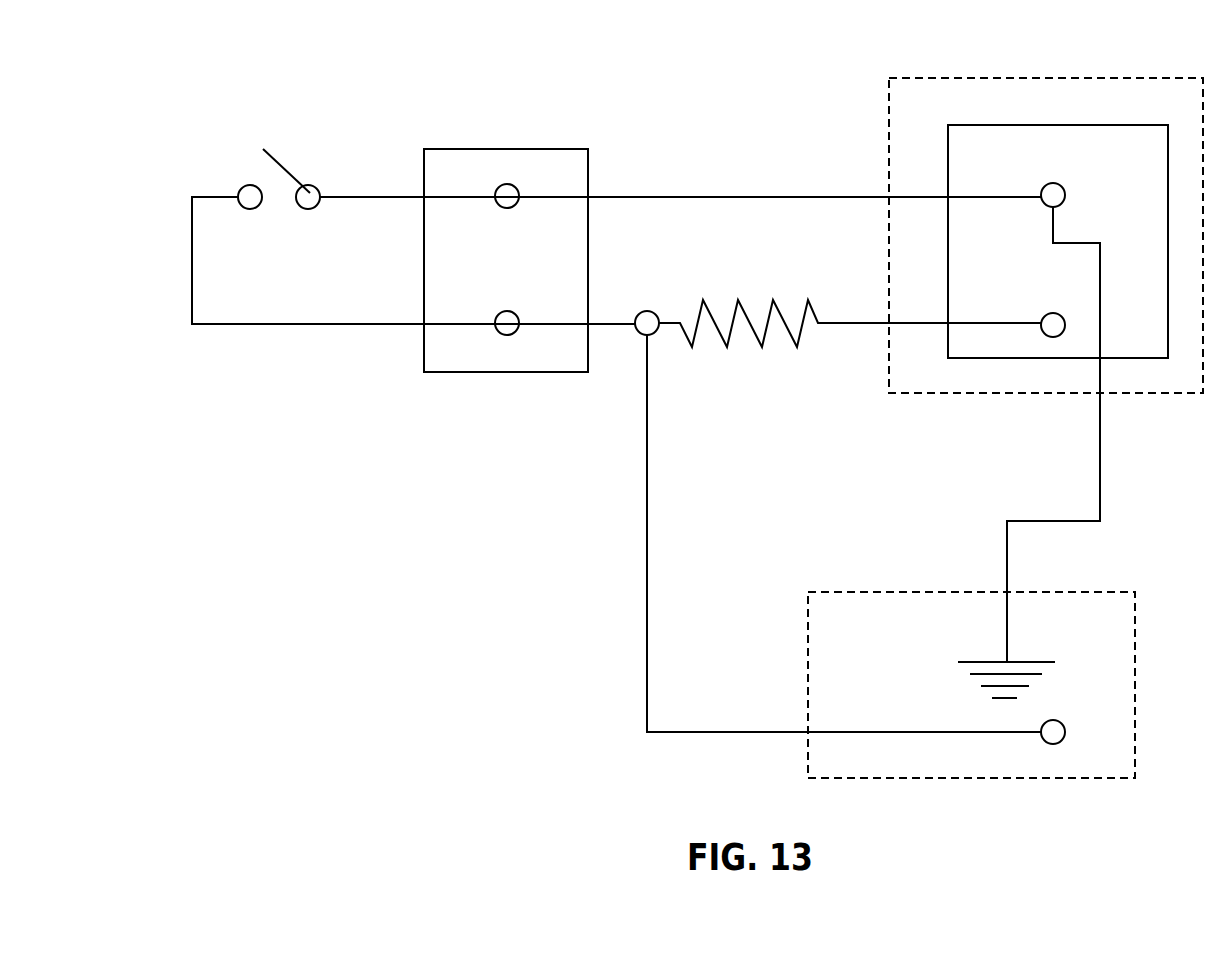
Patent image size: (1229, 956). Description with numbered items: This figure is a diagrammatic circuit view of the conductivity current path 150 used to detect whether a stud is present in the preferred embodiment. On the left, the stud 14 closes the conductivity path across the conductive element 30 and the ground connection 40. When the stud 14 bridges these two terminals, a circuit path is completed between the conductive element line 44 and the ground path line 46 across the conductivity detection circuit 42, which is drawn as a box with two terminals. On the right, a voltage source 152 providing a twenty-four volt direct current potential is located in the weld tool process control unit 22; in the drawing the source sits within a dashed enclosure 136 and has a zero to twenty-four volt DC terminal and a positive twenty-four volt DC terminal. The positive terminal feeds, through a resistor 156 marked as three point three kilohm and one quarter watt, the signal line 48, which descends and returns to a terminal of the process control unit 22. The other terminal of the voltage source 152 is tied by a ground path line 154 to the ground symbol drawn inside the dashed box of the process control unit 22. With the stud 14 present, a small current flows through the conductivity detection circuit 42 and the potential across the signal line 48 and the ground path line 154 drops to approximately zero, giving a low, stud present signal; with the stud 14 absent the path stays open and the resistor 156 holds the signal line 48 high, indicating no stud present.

The stud 14 is at (275, 160).
The weld tool process control unit 22 is at (1077, 592).
The conductive element 30 is at (308, 197).
The ground connection 40 is at (250, 197).
The conductivity detection circuit 42 is at (532, 149).
The conductive element line 44 is at (400, 197).
The ground path line 46 is at (262, 326).
The signal line 48 is at (645, 603).
The power supply housing 136 is at (888, 148).
The conductivity current path 150 is at (395, 501).
The voltage source 152 is at (1018, 358).
The ground path line 154 is at (1100, 477).
The resistor 156 is at (797, 347).